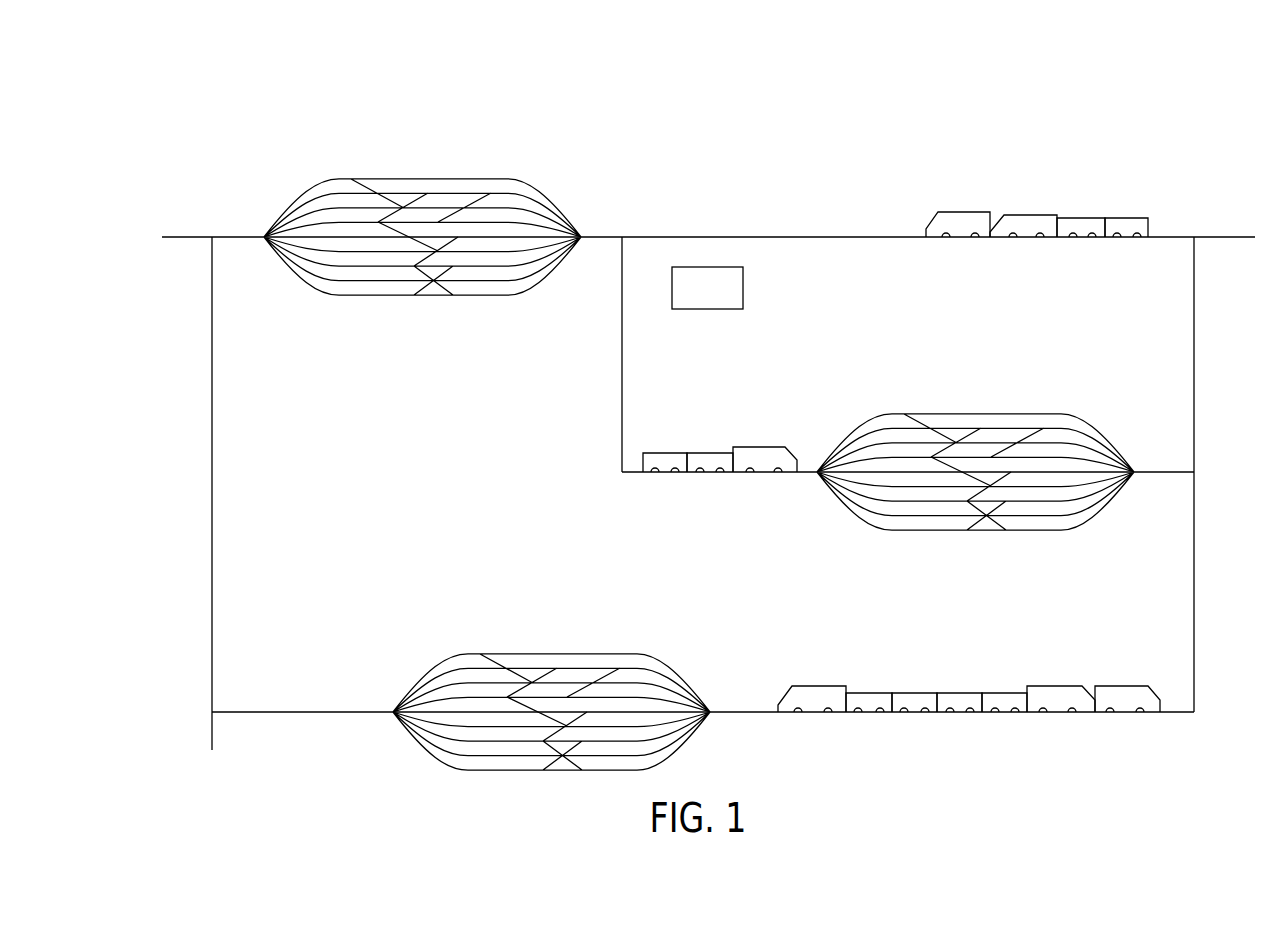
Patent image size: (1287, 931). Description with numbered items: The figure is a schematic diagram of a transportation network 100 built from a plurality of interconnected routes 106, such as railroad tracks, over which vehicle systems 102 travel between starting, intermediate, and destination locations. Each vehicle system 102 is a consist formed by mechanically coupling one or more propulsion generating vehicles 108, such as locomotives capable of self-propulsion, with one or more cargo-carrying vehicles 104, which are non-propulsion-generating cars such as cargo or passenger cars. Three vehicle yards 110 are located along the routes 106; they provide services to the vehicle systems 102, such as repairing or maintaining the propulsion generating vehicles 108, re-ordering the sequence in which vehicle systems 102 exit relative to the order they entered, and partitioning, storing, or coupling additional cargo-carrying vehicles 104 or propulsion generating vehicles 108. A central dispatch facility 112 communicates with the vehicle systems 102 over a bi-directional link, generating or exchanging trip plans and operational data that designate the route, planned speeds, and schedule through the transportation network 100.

The transportation network 100 is at (722, 436).
The vehicle system 102 is at (902, 468).
The cargo-carrying vehicle 104 is at (922, 250).
The route 106 is at (823, 237).
The propulsion generating vehicle 108 is at (965, 212).
The vehicle yard 110 is at (437, 163).
The central dispatch facility 112 is at (709, 266).